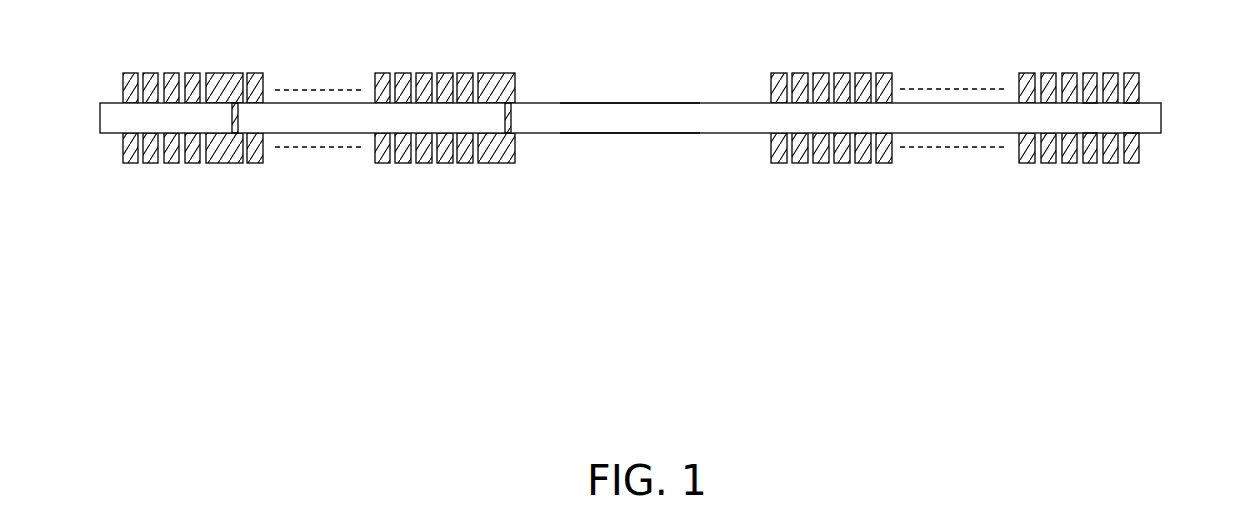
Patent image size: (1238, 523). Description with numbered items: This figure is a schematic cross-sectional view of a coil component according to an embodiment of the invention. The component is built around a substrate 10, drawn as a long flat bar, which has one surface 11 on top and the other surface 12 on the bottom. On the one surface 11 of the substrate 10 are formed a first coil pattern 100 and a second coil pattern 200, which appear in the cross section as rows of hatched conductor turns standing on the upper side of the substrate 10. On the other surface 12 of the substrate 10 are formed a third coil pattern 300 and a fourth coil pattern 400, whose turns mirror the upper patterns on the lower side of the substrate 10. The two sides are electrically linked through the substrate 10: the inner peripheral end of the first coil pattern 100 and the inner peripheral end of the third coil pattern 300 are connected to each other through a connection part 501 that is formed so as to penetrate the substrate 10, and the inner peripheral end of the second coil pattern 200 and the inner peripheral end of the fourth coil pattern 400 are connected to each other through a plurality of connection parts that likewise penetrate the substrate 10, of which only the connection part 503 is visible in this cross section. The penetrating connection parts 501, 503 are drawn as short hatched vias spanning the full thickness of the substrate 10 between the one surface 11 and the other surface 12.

The substrate 10 is at (1161, 118).
The one surface of the substrate 11 is at (628, 103).
The other surface of the substrate 12 is at (628, 133).
The first coil pattern 100 is at (1132, 73).
The second coil pattern 200 is at (1089, 73).
The third coil pattern 300 is at (1131, 163).
The fourth coil pattern 400 is at (1089, 163).
The connection part 501 is at (238, 117).
The connection part 503 is at (511, 118).